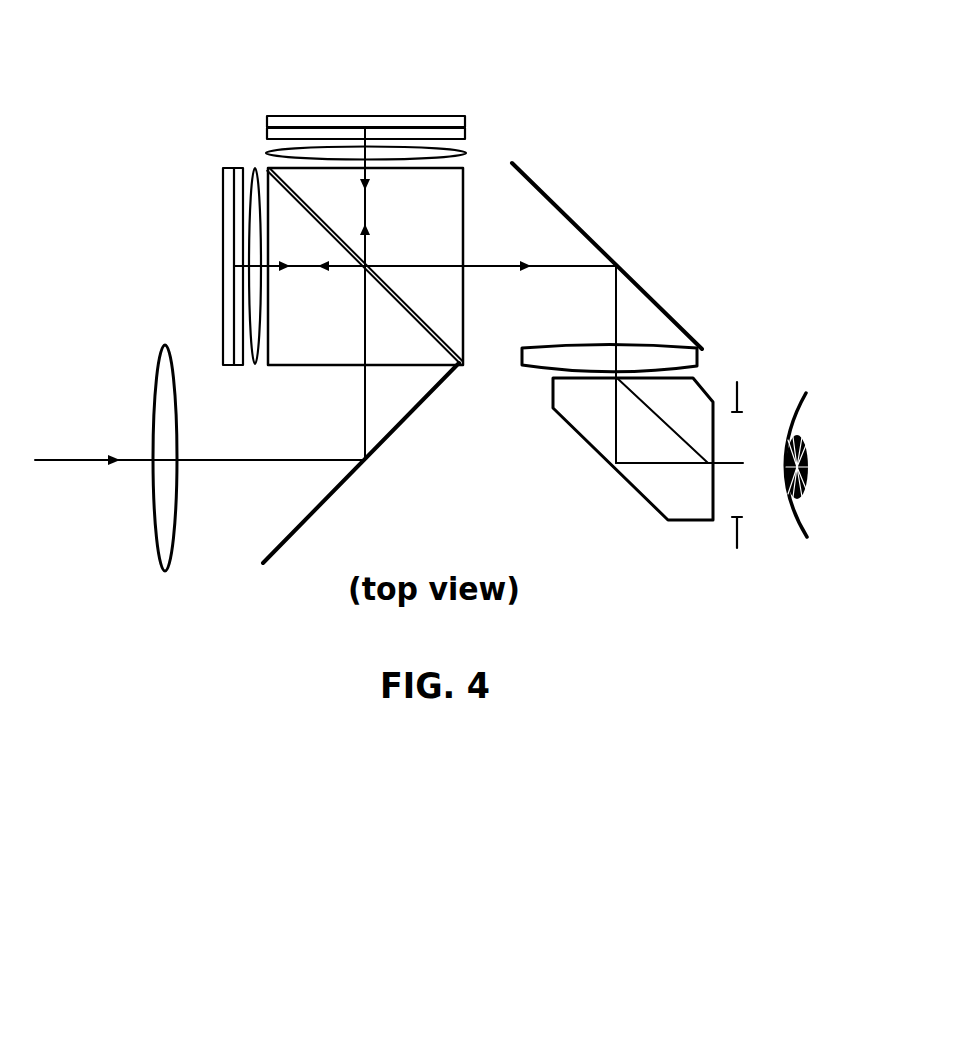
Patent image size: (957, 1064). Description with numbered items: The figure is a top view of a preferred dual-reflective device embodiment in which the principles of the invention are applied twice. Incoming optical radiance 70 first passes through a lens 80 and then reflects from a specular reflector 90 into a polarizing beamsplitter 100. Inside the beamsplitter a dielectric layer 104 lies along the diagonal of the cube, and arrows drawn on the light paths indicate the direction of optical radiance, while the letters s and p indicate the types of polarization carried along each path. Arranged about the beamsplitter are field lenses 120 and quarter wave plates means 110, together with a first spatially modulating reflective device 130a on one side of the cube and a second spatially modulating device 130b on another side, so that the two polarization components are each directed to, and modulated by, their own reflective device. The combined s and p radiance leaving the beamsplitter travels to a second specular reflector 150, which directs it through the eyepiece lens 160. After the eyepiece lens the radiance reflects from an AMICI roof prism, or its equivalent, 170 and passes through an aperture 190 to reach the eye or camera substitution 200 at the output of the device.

The incoming optical radiance 70 is at (200, 464).
The lens 80 is at (183, 458).
The specular reflector 90 is at (361, 463).
The polarizing beamsplitter 100 is at (425, 233).
The dielectric layer 104 is at (313, 200).
The quarter wave plates means 110 is at (327, 226).
The field lenses 120 is at (253, 167).
The first spatially modulating reflective device 130a is at (200, 266).
The second spatially modulating device 130b is at (366, 113).
The specular reflector 150 is at (607, 256).
The eyepiece lens 160 is at (677, 362).
The AMICI roof prism 170 is at (662, 393).
The aperture 190 is at (740, 530).
The eye or camera substitution 200 is at (827, 465).